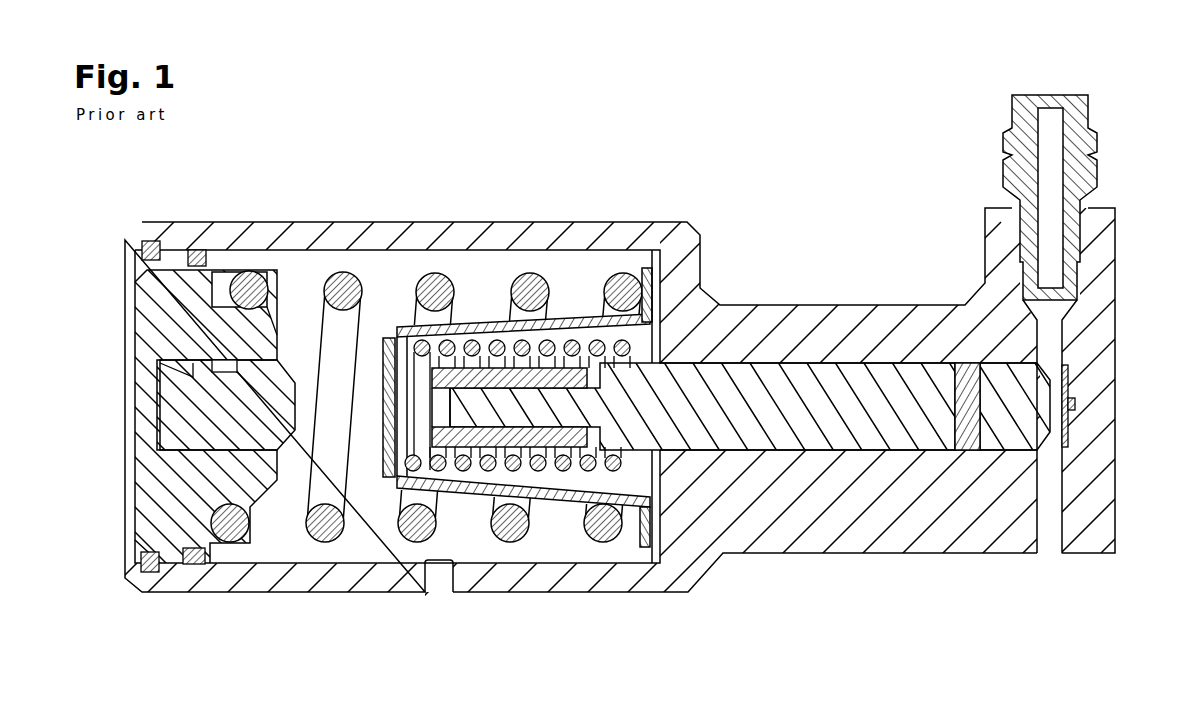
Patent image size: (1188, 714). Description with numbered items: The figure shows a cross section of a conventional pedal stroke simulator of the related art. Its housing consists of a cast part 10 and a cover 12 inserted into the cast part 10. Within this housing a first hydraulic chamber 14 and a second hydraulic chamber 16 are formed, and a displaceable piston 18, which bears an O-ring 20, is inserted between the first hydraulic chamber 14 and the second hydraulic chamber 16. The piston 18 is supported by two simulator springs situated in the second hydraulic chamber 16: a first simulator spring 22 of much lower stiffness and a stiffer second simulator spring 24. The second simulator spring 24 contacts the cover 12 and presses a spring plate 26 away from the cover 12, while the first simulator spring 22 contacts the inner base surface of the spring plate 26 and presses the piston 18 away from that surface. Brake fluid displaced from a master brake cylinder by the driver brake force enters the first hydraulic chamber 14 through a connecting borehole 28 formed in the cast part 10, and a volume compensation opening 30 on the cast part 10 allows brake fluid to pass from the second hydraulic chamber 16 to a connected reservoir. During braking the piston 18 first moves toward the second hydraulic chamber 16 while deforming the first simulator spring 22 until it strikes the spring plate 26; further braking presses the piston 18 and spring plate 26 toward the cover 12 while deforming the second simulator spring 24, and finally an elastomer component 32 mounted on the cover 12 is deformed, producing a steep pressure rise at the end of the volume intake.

The cast part 10 is at (1092, 342).
The cover 12 is at (155, 493).
The first hydraulic chamber 14 is at (1055, 437).
The second hydraulic chamber 16 is at (392, 276).
The piston 18 is at (868, 388).
The O-ring 20 is at (958, 385).
The first simulator spring 22 is at (468, 338).
The second simulator spring 24 is at (343, 280).
The spring plate 26 is at (568, 318).
The connecting borehole 28 is at (1048, 555).
The volume compensation opening 30 is at (440, 578).
The elastomer component 32 is at (178, 410).